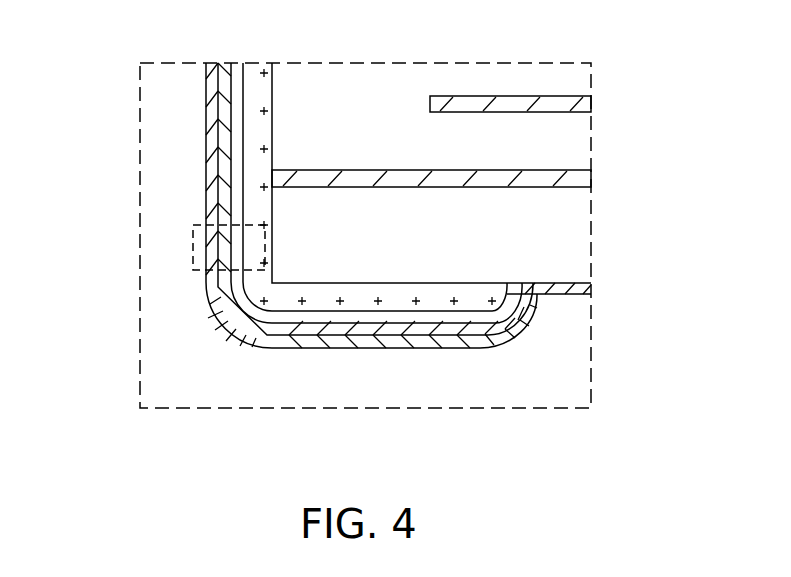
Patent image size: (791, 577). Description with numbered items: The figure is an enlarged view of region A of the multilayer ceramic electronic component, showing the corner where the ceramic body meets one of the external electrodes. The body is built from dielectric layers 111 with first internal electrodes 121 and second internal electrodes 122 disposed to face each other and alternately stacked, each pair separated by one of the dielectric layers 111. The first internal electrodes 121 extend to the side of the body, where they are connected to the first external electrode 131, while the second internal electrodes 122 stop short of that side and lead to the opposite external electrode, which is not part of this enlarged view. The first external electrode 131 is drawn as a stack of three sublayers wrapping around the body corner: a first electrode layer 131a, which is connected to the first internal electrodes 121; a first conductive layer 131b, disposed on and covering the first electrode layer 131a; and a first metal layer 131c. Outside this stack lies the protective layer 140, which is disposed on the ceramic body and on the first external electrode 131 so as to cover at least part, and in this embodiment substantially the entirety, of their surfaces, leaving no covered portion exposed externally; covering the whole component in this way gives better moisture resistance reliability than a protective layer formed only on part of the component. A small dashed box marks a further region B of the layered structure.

The dielectric layers 111 is at (577, 148).
The first internal electrodes 121 is at (573, 178).
The second internal electrodes 122 is at (578, 104).
The first external electrode 131 is at (55, 87).
The first electrode layer 131a is at (247, 93).
The first conductive layer 131b is at (240, 137).
The first metal layer 131c is at (247, 168).
The protective layer 140 is at (205, 207).
The region A is at (381, 463).
The region B is at (193, 250).